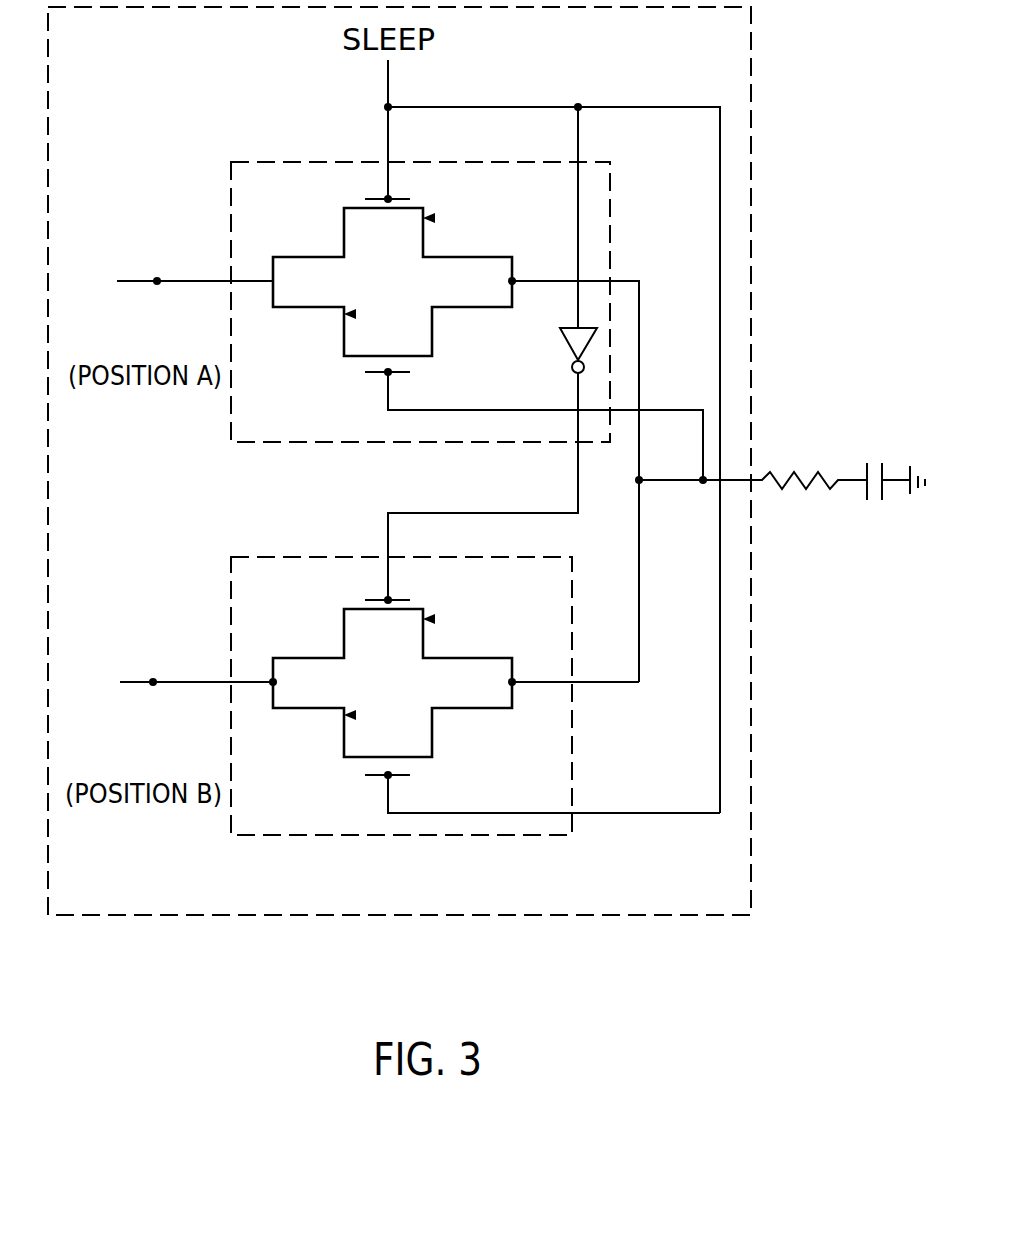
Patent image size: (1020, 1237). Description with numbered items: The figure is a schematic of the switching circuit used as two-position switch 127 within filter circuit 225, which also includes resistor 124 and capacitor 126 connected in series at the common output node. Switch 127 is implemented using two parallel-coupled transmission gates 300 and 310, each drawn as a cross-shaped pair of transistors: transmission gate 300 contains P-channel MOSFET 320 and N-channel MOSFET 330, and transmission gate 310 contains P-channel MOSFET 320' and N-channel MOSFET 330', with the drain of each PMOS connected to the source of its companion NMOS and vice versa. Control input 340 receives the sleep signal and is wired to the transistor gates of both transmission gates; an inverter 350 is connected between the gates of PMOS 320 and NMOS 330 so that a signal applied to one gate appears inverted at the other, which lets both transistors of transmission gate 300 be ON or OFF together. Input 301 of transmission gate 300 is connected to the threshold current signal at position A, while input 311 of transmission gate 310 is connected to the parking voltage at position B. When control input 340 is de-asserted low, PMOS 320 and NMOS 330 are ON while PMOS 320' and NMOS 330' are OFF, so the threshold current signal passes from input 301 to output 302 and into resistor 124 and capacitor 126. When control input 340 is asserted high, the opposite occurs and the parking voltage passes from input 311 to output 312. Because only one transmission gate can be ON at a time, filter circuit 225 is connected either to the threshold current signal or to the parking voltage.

The filter circuit 225 is at (843, 57).
The two-position switch 127 is at (478, 915).
The control input 340 is at (387, 107).
The transmission gate 300 is at (232, 208).
The P-channel MOSFET 320 is at (342, 215).
The N-channel MOSFET 330 is at (492, 399).
The input 301 is at (157, 285).
The output 302 is at (513, 280).
The inverter 350 is at (590, 341).
The resistor 124 is at (788, 490).
The capacitor 126 is at (866, 477).
The transmission gate 310 is at (232, 569).
The P-channel MOSFET 320' is at (341, 616).
The N-channel MOSFET 330' is at (487, 764).
The input 311 is at (153, 686).
The output 312 is at (513, 681).